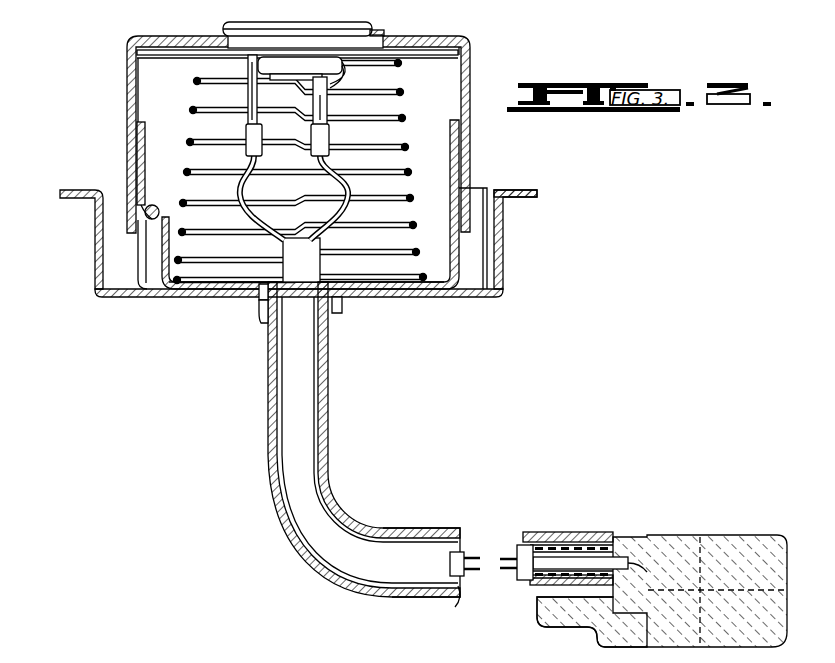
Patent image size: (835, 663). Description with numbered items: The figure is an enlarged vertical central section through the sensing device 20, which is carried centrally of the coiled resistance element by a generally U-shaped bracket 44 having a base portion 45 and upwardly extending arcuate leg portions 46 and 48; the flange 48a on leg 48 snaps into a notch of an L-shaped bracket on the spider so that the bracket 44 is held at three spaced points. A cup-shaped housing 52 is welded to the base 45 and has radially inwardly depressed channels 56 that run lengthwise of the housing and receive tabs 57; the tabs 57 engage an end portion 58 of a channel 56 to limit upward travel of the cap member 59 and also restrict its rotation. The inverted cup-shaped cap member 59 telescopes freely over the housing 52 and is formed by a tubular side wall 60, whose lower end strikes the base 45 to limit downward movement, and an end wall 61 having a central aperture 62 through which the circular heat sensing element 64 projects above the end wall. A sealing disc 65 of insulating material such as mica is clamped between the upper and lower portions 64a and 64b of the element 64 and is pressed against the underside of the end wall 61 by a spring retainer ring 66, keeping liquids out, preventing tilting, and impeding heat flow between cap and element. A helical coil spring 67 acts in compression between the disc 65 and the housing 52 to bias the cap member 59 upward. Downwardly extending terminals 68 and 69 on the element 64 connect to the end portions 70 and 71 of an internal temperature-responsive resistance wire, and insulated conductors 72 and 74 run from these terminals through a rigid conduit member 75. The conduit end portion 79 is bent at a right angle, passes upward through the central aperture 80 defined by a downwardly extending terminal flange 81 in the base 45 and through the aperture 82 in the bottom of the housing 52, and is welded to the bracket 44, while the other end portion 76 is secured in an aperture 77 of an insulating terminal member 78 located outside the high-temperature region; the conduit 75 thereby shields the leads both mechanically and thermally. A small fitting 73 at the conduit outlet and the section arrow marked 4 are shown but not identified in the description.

The section line 4 is at (690, 478).
The sensing device 20 is at (491, 46).
The U-shaped bracket 44 is at (326, 251).
The base portion 45 is at (200, 297).
The leg portion 46 is at (97, 228).
The leg portion 48 is at (503, 240).
The flange 48a is at (538, 195).
The cup-shaped housing 52 is at (464, 267).
The channel 56 is at (160, 291).
The tab 57 is at (150, 236).
The end portion of channel 58 is at (160, 210).
The cap member 59 is at (535, 90).
The tubular side wall 60 is at (470, 172).
The end wall 61 is at (438, 70).
The central aperture 62 is at (385, 33).
The heat sensing element 64 is at (228, 27).
The upper portion of sensing element 64a is at (320, 28).
The lower portion of sensing element 64b is at (272, 59).
The sealing disc 65 is at (458, 52).
The spring retainer ring 66 is at (474, 97).
The helical coil spring 67 is at (434, 150).
The terminal 68 is at (247, 90).
The terminal 69 is at (338, 98).
The terminal end portion of resistance wire 70 is at (247, 68).
The terminal end portion of resistance wire 71 is at (343, 73).
The insulated conductor 72 is at (242, 185).
The plug 73 is at (470, 557).
The insulated conductor 74 is at (349, 183).
The conduit member 75 is at (439, 526).
The end portion of conduit 76 is at (573, 534).
The aperture 77 is at (545, 617).
The insulating terminal member 78 is at (682, 535).
The end portion of conduit 79 is at (336, 335).
The central aperture 80 is at (263, 322).
The terminal flange 81 is at (344, 305).
The central aperture 82 is at (266, 292).